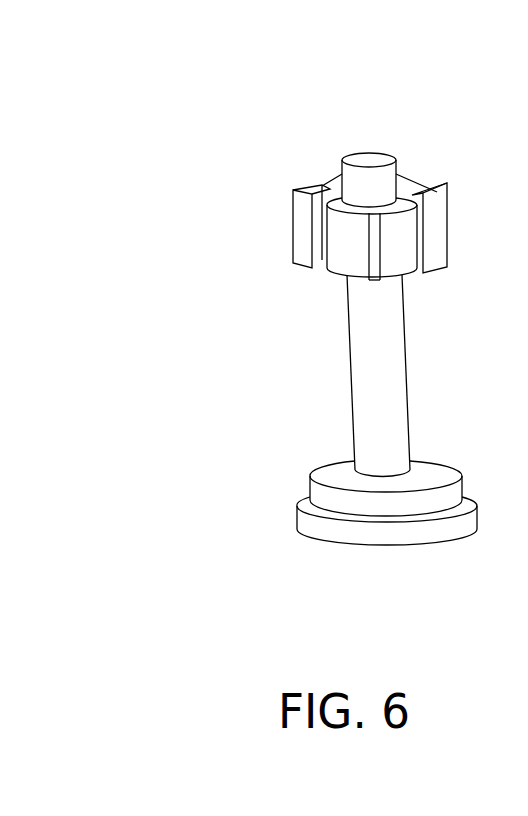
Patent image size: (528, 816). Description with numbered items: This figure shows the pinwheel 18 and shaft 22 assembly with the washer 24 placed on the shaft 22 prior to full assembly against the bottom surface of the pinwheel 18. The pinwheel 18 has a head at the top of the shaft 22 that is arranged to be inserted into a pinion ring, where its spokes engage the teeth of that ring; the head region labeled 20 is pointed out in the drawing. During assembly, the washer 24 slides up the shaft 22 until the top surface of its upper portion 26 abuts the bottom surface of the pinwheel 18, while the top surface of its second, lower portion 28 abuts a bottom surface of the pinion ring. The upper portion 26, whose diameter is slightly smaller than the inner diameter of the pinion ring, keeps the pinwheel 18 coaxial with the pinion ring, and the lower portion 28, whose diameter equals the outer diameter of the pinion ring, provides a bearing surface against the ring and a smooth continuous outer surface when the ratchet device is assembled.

The pinwheel 18 is at (423, 158).
The finned head body 20 is at (422, 272).
The shaft 22 is at (392, 361).
The washer 24 is at (379, 560).
The upper portion of the washer 26 is at (336, 469).
The lower portion of the washer 28 is at (302, 537).